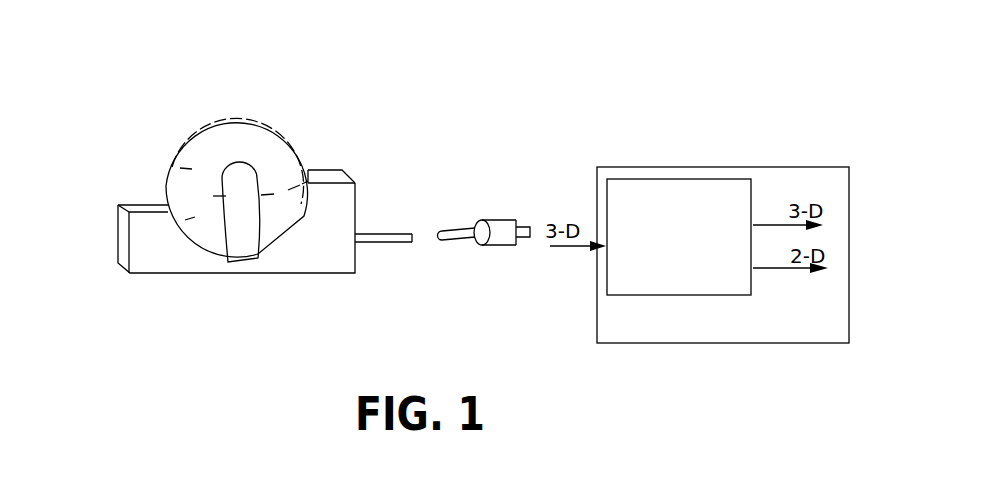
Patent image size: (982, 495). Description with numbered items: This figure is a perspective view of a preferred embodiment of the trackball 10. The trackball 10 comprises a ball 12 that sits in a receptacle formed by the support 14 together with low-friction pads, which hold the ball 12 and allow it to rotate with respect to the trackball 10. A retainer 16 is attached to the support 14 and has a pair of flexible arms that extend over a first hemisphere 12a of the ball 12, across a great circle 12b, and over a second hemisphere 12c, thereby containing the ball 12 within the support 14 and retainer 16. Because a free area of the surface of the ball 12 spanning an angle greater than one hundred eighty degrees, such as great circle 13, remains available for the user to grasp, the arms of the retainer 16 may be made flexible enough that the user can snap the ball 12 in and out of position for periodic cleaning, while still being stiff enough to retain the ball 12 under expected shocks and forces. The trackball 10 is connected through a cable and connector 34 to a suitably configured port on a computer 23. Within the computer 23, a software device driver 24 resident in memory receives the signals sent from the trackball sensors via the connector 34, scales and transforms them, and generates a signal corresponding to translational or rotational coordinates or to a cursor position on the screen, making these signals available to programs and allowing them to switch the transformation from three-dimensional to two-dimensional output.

The trackball 10 is at (345, 113).
The ball 12 is at (197, 127).
The first hemisphere 12a is at (192, 218).
The great circle 12b is at (200, 193).
The second hemisphere 12c is at (187, 168).
The great circle 13 is at (250, 118).
The support 14 is at (192, 265).
The retainer 16 is at (238, 252).
The computer 23 is at (733, 345).
The software device driver 24 is at (670, 178).
The connector 34 is at (495, 228).